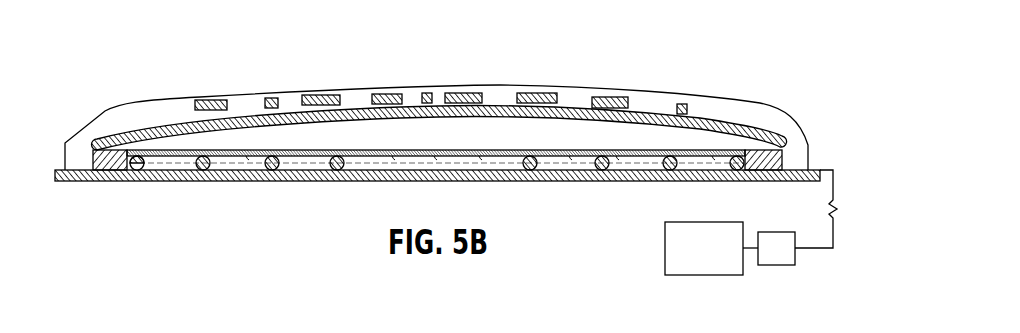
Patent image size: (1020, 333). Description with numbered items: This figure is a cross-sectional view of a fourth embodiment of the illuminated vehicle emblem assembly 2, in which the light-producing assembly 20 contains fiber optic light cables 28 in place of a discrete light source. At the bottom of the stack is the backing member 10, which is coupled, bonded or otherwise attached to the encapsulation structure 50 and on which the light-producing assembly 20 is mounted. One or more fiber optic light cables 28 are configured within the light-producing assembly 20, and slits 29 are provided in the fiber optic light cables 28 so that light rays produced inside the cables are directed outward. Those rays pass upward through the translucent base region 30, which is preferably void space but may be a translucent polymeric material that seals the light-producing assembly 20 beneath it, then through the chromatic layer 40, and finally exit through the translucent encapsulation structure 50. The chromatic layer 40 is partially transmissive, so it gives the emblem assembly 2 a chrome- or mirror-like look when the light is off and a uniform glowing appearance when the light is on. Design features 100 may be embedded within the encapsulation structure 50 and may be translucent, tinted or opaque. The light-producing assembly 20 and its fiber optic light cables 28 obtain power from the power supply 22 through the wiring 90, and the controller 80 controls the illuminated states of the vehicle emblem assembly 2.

The illuminated vehicle emblem assembly 2 is at (156, 42).
The backing member 10 is at (62, 169).
The light-producing assembly 20 is at (157, 152).
The power supply 22 is at (665, 246).
The fiber optic light cables 28 is at (335, 172).
The slits 29 is at (136, 154).
The translucent base region 30 is at (694, 138).
The chromatic layer 40 is at (158, 127).
The encapsulation structure 50 is at (578, 98).
The controller 80 is at (767, 259).
The wiring 90 is at (818, 250).
The design features 100 is at (388, 94).